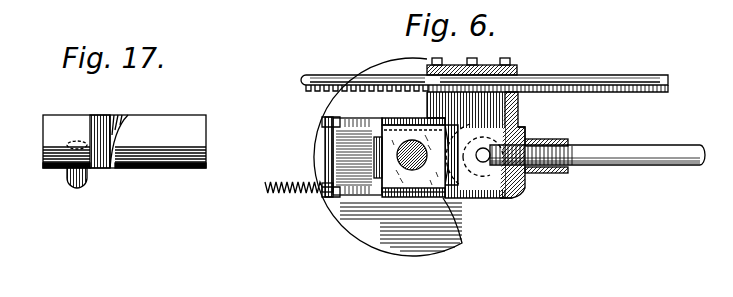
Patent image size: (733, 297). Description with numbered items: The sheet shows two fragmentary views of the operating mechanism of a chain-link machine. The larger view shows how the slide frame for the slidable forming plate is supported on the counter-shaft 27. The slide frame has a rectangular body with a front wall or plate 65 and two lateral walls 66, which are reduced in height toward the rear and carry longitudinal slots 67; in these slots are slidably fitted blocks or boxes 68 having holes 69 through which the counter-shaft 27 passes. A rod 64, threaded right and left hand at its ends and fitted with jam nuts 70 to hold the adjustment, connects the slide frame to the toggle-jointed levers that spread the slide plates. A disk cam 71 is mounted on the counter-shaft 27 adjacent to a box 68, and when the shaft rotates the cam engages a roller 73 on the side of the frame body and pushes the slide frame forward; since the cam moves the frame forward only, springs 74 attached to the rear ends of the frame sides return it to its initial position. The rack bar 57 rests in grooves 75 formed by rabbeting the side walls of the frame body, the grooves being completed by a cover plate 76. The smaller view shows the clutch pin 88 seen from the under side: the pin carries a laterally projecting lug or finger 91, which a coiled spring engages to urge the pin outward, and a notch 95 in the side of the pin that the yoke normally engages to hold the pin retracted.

In FIG. 6, the counter-shaft 27 is at (404, 190).
In FIG. 6, the rack bar 57 is at (582, 85).
In FIG. 6, the rod 64 is at (635, 150).
In FIG. 6, the front wall or plate 65 is at (519, 104).
In FIG. 6, the lateral walls 66 is at (470, 172).
In FIG. 6, the longitudinal slots 67 is at (357, 168).
In FIG. 6, the blocks or boxes 68 is at (432, 172).
In FIG. 6, the holes 69 is at (396, 142).
In FIG. 6, the jam nuts 70 is at (568, 173).
In FIG. 6, the disk cam 71 is at (353, 228).
In FIG. 6, the rollers 73 is at (527, 129).
In FIG. 6, the springs 74 is at (299, 162).
In FIG. 6, the grooves 75 is at (520, 75).
In FIG. 6, the cover plate 76 is at (486, 64).
In FIG. 17, the clutch pin 88 is at (173, 127).
In FIG. 17, the laterally projecting lug or finger 91 is at (72, 177).
In FIG. 17, the notch 95 is at (108, 162).